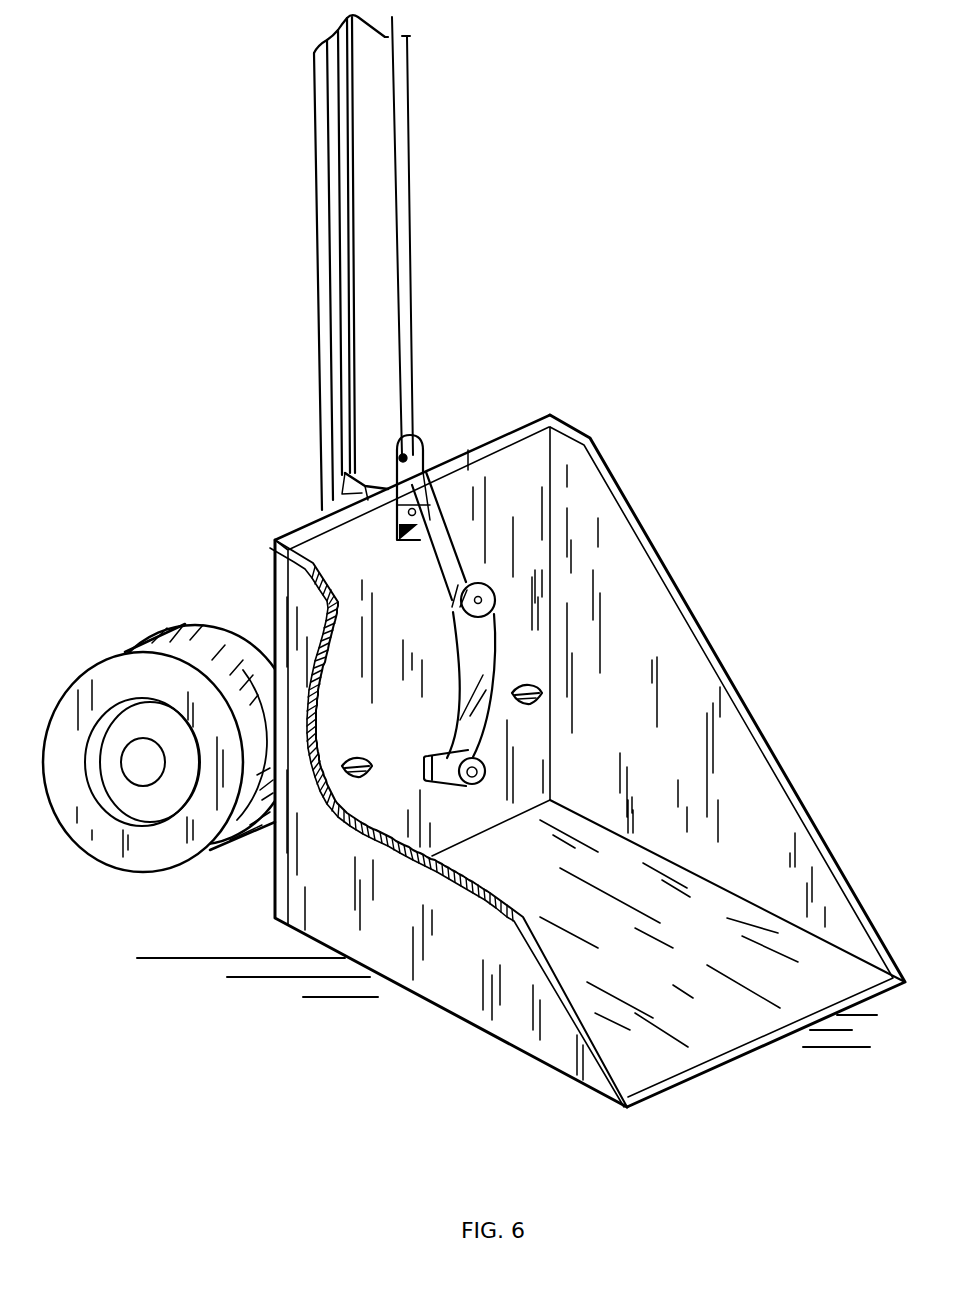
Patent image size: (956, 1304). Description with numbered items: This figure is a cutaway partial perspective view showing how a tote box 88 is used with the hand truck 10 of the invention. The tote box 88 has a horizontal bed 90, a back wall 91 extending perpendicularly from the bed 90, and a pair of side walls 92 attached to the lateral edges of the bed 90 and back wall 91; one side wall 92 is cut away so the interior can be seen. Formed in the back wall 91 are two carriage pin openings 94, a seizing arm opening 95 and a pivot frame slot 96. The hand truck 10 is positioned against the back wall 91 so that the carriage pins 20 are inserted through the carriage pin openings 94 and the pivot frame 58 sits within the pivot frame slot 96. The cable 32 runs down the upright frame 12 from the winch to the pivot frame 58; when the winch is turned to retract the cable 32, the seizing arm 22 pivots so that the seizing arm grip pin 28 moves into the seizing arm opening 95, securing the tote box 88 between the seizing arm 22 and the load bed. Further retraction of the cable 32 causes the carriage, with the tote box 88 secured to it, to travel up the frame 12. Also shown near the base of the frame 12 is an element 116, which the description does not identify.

The hand truck 10 is at (288, 228).
The frame 12 is at (320, 306).
The cable 32 is at (400, 296).
The pivot frame 58 is at (437, 468).
The mounting bracket 116 is at (322, 506).
The back wall 91 is at (340, 557).
The pivot frame slot 96 is at (410, 543).
The seizing arm 22 is at (450, 575).
The tote box 88 is at (652, 635).
The carriage pins 20 is at (358, 757).
The carriage pin openings 94 is at (350, 777).
The seizing arm opening 95 is at (428, 755).
The seizing arm grip pin 28 is at (462, 786).
The horizontal bed 90 is at (504, 872).
The side walls 92 is at (382, 915).